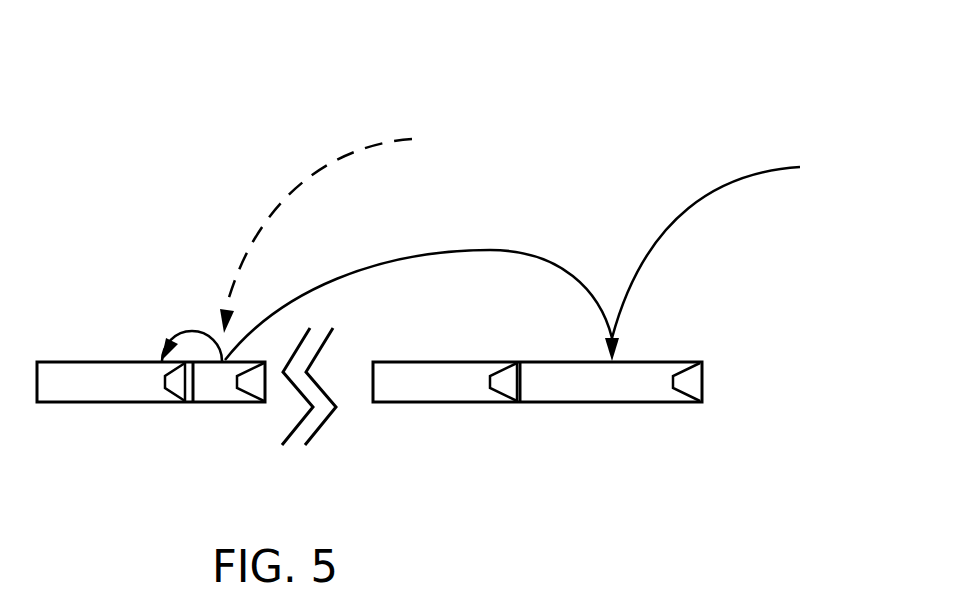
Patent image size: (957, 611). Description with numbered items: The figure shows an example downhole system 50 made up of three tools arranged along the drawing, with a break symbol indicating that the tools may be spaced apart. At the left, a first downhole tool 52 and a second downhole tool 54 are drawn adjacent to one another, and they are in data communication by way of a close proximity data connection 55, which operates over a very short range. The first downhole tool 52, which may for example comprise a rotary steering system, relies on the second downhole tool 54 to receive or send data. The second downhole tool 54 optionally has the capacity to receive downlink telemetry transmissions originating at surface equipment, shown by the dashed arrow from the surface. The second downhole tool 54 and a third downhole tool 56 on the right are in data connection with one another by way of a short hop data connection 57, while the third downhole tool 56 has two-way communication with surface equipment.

The downhole system 50 is at (655, 92).
The first downhole tool 52 is at (115, 402).
The second downhole tool 54 is at (225, 402).
The close proximity data connection 55 is at (187, 332).
The third downhole tool 56 is at (612, 402).
The short hop data connection 57 is at (427, 250).